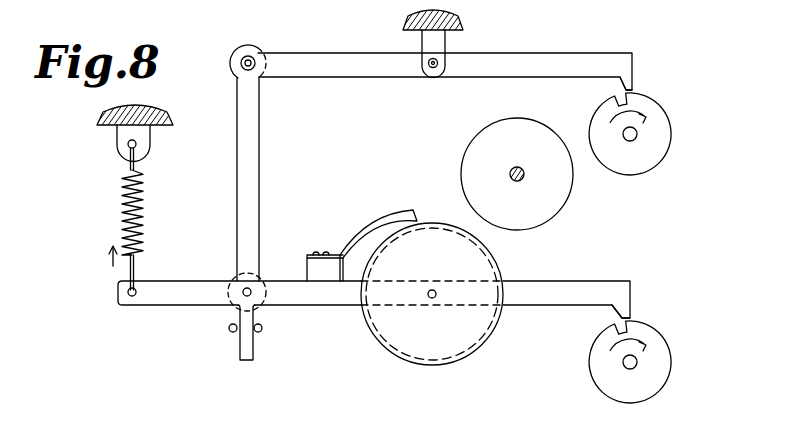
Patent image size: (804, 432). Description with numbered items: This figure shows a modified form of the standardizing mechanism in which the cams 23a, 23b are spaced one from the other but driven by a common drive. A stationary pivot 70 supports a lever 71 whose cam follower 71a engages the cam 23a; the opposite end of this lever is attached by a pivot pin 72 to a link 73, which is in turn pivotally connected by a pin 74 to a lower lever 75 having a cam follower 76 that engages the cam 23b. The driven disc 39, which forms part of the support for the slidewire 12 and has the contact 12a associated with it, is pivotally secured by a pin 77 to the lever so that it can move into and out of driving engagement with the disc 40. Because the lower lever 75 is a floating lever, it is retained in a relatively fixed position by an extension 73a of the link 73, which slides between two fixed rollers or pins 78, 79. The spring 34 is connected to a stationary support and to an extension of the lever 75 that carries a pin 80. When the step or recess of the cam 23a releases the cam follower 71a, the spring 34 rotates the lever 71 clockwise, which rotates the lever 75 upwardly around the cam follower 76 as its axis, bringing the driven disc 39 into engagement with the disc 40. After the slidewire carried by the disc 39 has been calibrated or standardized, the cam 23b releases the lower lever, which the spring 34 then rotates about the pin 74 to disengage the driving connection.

The slidewire 12 is at (422, 364).
The contact 12a is at (363, 233).
The cam 23a is at (673, 130).
The cam 23b is at (673, 352).
The spring 34 is at (123, 225).
The driven disc 39 is at (497, 325).
The disc 40 is at (564, 201).
The stationary pivot 70 is at (430, 68).
The lever 71 is at (500, 56).
The cam follower 71a is at (635, 72).
The pivot pin 72 is at (250, 61).
The link 73 is at (239, 180).
The extension 73a is at (254, 351).
The pin 74 is at (245, 290).
The lower lever 75 is at (330, 299).
The cam follower 76 is at (633, 295).
The pin 77 is at (429, 298).
The fixed roller or pin 78 is at (229, 328).
The fixed roller or pin 79 is at (262, 328).
The pin 80 is at (126, 297).